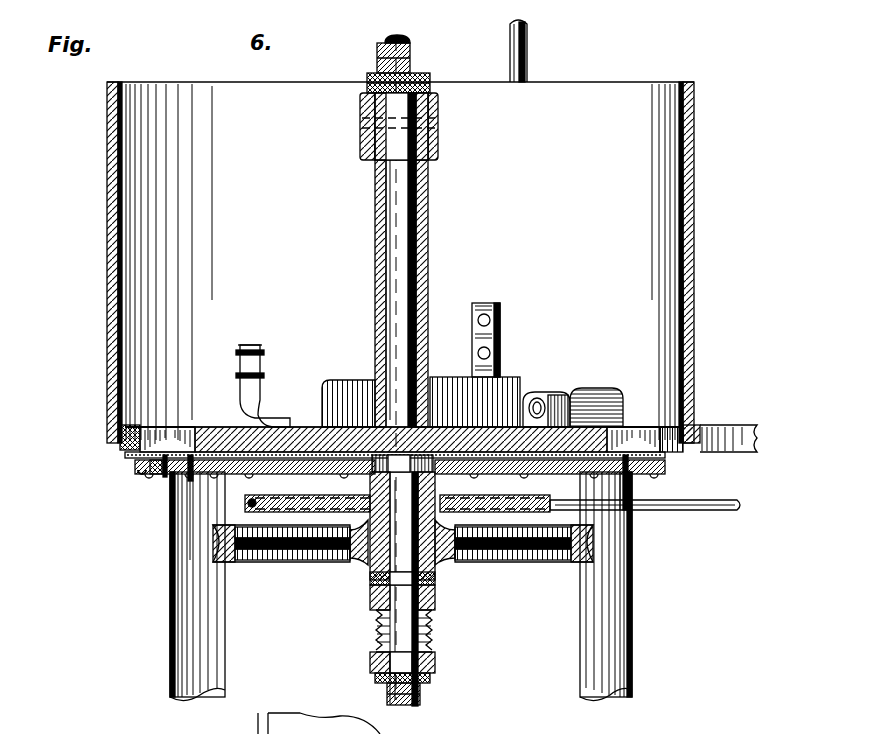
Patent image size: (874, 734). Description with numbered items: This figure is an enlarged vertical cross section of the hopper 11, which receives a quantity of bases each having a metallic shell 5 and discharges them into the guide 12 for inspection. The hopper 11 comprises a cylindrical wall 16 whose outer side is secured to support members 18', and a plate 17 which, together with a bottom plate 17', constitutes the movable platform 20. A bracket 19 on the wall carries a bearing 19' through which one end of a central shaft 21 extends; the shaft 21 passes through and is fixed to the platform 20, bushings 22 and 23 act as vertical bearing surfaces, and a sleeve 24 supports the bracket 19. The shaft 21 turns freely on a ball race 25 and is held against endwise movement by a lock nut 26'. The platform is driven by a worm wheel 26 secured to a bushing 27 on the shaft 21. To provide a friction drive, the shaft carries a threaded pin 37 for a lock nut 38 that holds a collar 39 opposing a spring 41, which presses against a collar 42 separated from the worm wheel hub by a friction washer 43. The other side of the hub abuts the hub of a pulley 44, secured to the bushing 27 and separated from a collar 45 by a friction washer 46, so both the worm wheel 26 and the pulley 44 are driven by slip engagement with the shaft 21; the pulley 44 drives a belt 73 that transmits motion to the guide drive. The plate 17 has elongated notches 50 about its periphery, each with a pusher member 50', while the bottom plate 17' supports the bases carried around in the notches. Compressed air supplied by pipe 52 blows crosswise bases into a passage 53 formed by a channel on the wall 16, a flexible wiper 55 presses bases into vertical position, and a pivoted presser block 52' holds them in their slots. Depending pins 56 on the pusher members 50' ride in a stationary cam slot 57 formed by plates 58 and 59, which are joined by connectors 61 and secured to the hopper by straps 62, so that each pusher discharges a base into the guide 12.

The hopper 11 is at (697, 180).
The guide 12 is at (745, 436).
The cylindrical wall 16 is at (695, 304).
The plate 17 is at (395, 411).
The bottom plate 17' is at (367, 481).
The support members 18' is at (410, 586).
The bracket 19 is at (428, 130).
The bearing 19' is at (508, 340).
The movable platform 20 is at (653, 420).
The central shaft 21 is at (395, 37).
The bushing 22 is at (433, 412).
The bushing 23 is at (437, 118).
The sleeve 24 is at (428, 275).
The ball race 25 is at (432, 84).
The worm wheel 26 is at (524, 565).
The lock nut 26' is at (371, 54).
The bushing 27 is at (368, 565).
The threaded pin 37 is at (437, 665).
The lock nut 38 is at (420, 698).
The collar 39 is at (433, 678).
The spring 41 is at (433, 633).
The collar 42 is at (370, 602).
The friction washer 43 is at (370, 583).
The pulley 44 is at (303, 510).
The collar 45 is at (430, 470).
The friction washer 46 is at (378, 478).
The elongated notches 50 is at (405, 430).
The pusher member 50' is at (399, 429).
The metallic shell 5 is at (120, 432).
The pipe 52 is at (546, 51).
The presser block 52' is at (601, 389).
The passage 53 is at (345, 378).
The flexible wiper 55 is at (250, 400).
The depending pins 56 is at (188, 480).
The cam slot 57 is at (192, 480).
The plate 58 is at (263, 473).
The plate 59 is at (135, 470).
The connectors 61 is at (165, 476).
The straps 62 is at (505, 474).
The belt 73 is at (672, 512).